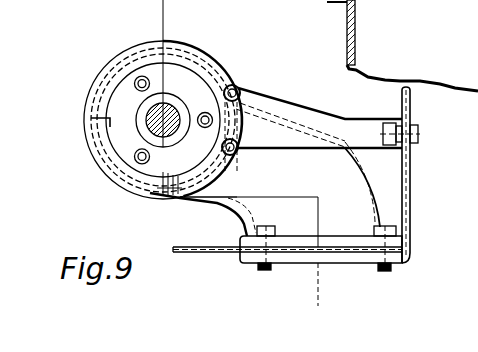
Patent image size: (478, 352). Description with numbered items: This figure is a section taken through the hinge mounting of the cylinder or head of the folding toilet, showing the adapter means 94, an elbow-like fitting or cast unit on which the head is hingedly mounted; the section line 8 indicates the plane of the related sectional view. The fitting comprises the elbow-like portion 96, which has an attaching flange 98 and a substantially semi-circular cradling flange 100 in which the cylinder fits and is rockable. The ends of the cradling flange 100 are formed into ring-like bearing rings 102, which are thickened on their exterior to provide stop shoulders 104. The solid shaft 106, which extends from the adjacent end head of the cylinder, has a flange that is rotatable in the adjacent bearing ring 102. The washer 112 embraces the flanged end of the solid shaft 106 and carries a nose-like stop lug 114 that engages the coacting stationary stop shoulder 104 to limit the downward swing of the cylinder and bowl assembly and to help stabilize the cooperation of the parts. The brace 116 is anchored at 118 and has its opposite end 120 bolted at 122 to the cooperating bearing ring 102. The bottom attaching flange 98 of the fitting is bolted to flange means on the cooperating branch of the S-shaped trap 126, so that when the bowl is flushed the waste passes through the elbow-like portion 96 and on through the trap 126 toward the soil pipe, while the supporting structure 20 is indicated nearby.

The section line 8- 8 is at (203, 23).
The mounting plate 20 is at (413, 182).
The adapter means 94 is at (375, 186).
The elbow-like portion 96 is at (342, 157).
The attaching flange 98 is at (345, 236).
The cradling flange 100 is at (130, 183).
The bearing ring 102 is at (188, 78).
The stop shoulder 104 is at (167, 185).
The solid shaft 106 is at (150, 125).
The washer 112 is at (202, 87).
The stop lug 114 is at (97, 105).
The brace 116 is at (335, 122).
The anchor 118 is at (418, 126).
The brace end 120 is at (230, 122).
The bolt 122 is at (238, 86).
The S-shaped trap 126 is at (358, 38).